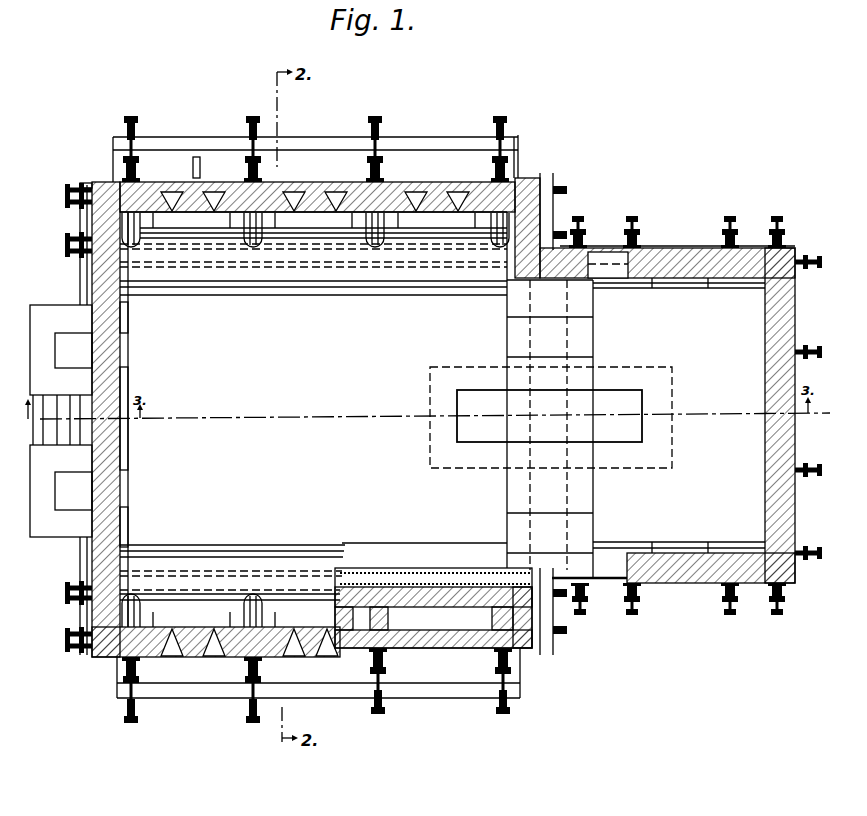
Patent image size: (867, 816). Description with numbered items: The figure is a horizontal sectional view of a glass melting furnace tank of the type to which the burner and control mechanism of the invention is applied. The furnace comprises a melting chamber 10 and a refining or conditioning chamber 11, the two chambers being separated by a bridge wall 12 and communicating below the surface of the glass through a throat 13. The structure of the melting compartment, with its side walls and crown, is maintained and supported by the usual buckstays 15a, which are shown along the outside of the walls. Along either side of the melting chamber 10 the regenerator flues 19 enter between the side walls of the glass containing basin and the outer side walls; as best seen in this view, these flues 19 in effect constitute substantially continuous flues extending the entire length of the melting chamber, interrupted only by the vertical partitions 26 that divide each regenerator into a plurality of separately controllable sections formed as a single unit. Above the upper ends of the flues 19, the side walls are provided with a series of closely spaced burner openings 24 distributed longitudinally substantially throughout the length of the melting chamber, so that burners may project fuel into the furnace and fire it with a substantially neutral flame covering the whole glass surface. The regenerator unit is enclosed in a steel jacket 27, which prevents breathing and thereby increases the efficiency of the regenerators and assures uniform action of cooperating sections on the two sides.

The melting chamber 10 is at (313, 419).
The refining or conditioning chamber 11 is at (667, 415).
The bridge wall 12 is at (580, 502).
The throat 13 is at (622, 400).
The buckstays 15a is at (386, 165).
The regenerator flues 19 is at (203, 222).
The burner openings 24 is at (196, 203).
The vertical partitions 26 is at (372, 222).
The steel jacket 27 is at (303, 140).